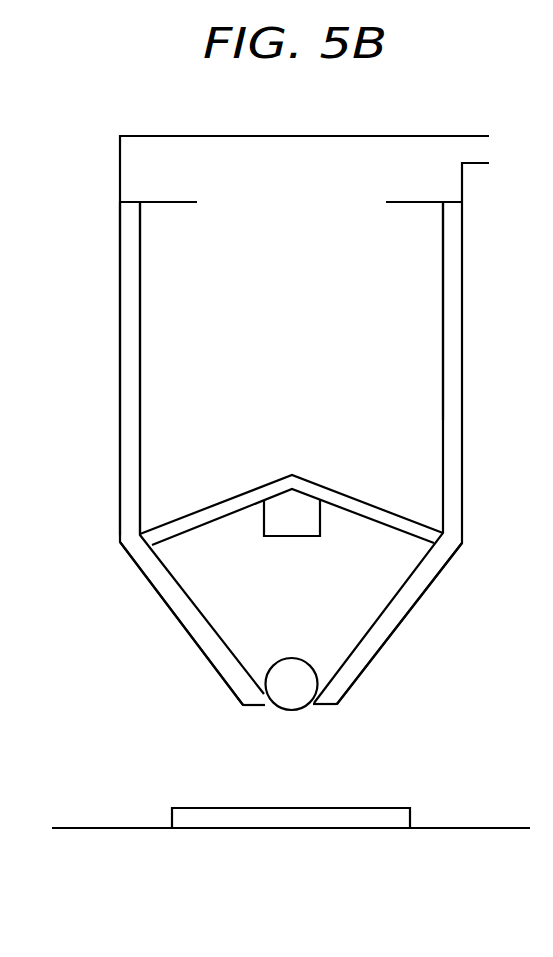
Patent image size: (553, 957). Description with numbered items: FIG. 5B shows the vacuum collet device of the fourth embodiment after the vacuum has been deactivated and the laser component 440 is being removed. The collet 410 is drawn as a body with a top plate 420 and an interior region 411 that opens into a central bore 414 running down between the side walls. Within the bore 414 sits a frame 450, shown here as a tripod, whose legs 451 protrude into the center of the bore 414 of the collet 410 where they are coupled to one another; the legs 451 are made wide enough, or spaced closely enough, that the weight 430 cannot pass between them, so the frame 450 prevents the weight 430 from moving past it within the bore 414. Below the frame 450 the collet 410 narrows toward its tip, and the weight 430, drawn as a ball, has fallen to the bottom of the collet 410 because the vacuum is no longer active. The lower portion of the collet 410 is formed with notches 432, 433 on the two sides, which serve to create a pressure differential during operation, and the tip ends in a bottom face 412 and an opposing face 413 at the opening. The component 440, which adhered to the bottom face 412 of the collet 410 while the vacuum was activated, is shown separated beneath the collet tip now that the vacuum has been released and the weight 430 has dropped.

The top plate 420 is at (141, 169).
The interior space of body 411 is at (412, 212).
The bore 414 is at (408, 415).
The collet 410 is at (447, 543).
The frame 450 is at (273, 476).
The legs 451 is at (208, 513).
The weight 430 is at (283, 672).
The notch 432 is at (234, 697).
The notch 433 is at (352, 697).
The bottom face 412 is at (259, 708).
The right arm tip 413 is at (302, 714).
The component 440 is at (398, 817).